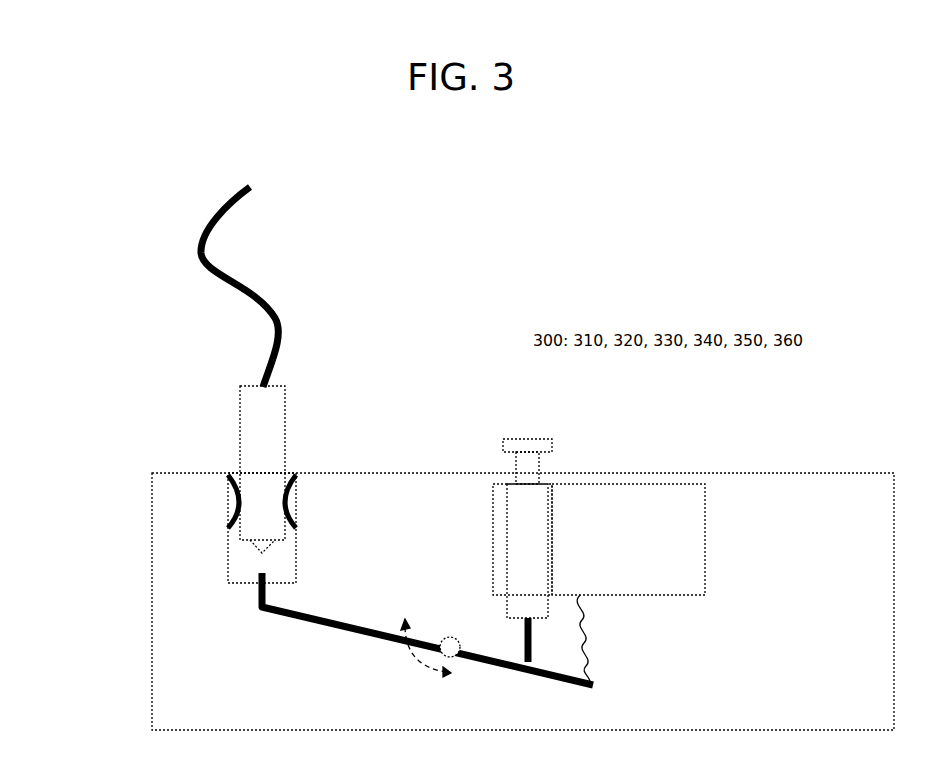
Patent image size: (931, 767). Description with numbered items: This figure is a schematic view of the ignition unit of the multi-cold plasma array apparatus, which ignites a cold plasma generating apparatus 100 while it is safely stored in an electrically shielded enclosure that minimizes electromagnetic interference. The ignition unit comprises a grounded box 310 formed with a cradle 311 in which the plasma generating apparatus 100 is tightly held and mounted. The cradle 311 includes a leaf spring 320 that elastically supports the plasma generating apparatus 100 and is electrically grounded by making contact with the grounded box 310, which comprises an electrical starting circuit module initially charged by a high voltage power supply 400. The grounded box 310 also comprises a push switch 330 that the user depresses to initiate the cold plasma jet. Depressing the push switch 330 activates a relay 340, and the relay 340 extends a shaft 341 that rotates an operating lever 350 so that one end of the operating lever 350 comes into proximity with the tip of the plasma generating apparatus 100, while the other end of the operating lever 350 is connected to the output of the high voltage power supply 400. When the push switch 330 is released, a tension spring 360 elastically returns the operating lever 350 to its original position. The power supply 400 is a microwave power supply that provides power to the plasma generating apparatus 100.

The cold plasma generating apparatus 100 is at (246, 437).
The grounded box 310 is at (150, 632).
The cradle 311 is at (228, 560).
The leaf spring 320 is at (232, 503).
The push switch 330 is at (523, 438).
The relay 340 is at (540, 523).
The shaft 341 is at (520, 640).
The operating lever 350 is at (310, 622).
The tension spring 360 is at (590, 625).
The high voltage power supply 400 is at (705, 555).